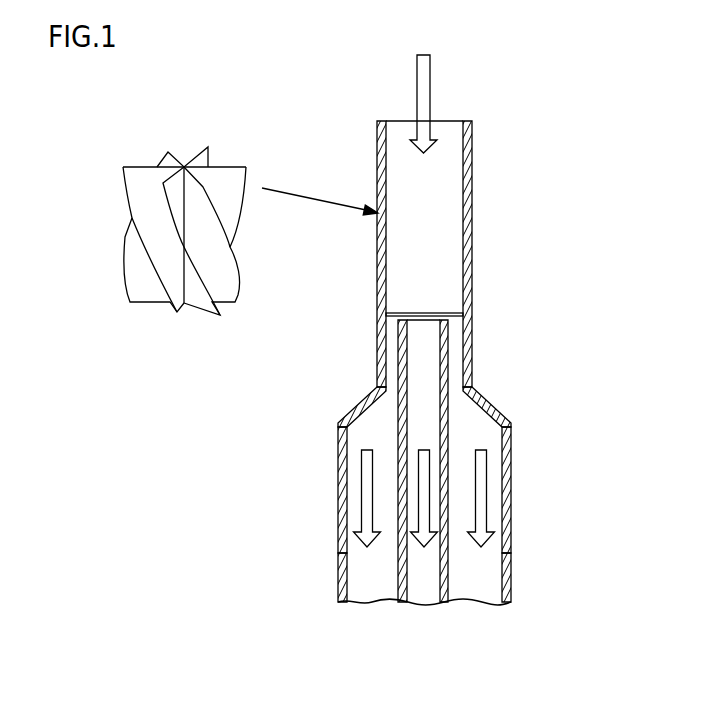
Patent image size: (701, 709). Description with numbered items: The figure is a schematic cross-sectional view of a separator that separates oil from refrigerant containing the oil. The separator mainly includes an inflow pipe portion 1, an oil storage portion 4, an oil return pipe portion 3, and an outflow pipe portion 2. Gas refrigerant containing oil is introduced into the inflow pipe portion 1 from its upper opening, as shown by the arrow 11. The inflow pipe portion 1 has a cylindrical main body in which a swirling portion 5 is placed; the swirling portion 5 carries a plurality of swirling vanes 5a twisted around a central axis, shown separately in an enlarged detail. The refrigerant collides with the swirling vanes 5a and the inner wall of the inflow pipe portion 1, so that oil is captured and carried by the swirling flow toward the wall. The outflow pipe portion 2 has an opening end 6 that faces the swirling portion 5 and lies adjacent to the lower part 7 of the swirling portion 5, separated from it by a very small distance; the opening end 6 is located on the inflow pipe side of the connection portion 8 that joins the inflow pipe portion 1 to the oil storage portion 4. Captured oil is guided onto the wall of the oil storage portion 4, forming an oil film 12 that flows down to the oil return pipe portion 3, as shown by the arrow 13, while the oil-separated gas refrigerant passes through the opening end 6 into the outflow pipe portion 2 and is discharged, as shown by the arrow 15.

The inflow pipe portion 1 is at (488, 122).
The outflow pipe portion 2 is at (447, 590).
The oil return pipe portion 3 is at (533, 553).
The oil storage portion 4 is at (488, 389).
The swirling portion 5 is at (102, 152).
The swirling vane 5a is at (233, 190).
The opening end 6 is at (415, 314).
The lower part 7 is at (463, 318).
The connection portion 8 is at (388, 392).
The arrow 11 is at (433, 83).
The oil film 12 is at (497, 590).
The arrow 13 is at (487, 487).
The arrow 15 is at (413, 455).